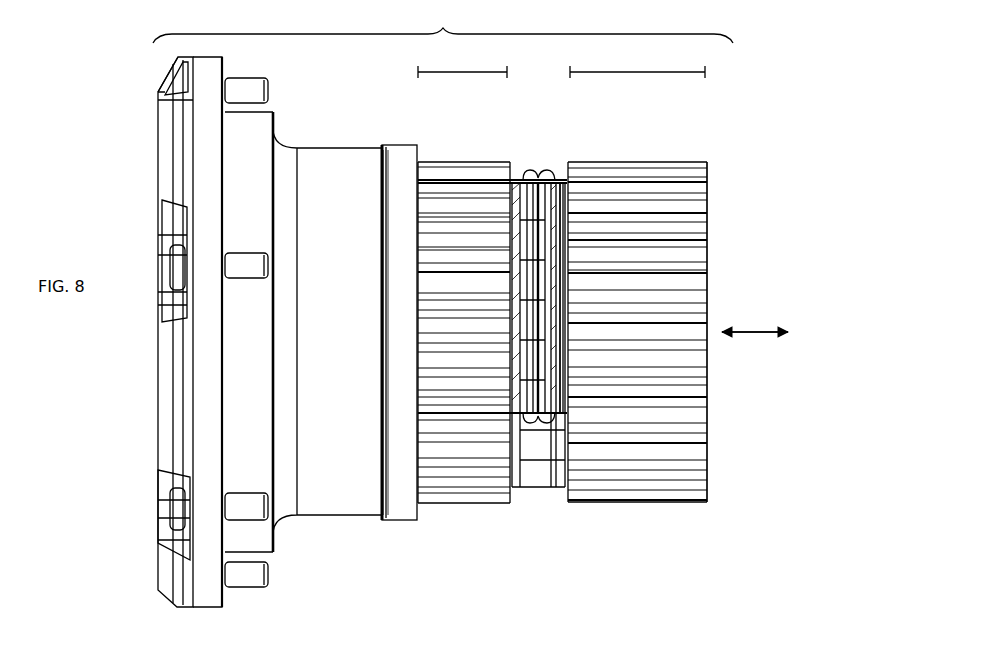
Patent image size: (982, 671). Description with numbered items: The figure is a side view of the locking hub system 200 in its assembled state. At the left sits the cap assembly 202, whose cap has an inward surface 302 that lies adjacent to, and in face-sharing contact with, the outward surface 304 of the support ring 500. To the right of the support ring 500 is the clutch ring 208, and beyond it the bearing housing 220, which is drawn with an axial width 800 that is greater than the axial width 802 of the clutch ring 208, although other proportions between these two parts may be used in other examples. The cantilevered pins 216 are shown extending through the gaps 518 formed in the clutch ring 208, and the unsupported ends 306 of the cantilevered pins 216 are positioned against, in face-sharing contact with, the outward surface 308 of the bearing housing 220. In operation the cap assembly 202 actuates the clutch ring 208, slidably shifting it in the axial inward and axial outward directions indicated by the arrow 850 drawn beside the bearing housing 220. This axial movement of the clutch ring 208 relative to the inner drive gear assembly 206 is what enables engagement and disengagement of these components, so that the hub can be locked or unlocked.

The locking hub system 200 is at (443, 25).
The cap assembly 202 is at (292, 97).
The inner drive gear assembly 206 is at (719, 184).
The clutch ring 208 is at (461, 146).
The cantilevered pins 216 is at (516, 178).
The bearing housing 220 is at (637, 150).
The inward surface 302 is at (385, 210).
The outward surface 304 is at (387, 222).
The unsupported ends 306 is at (547, 178).
The outward surface 308 is at (568, 185).
The support ring 500 is at (398, 138).
The gaps 518 is at (477, 172).
The axial width 800 is at (617, 70).
The axial width 802 is at (464, 70).
The arrow 850 is at (770, 328).